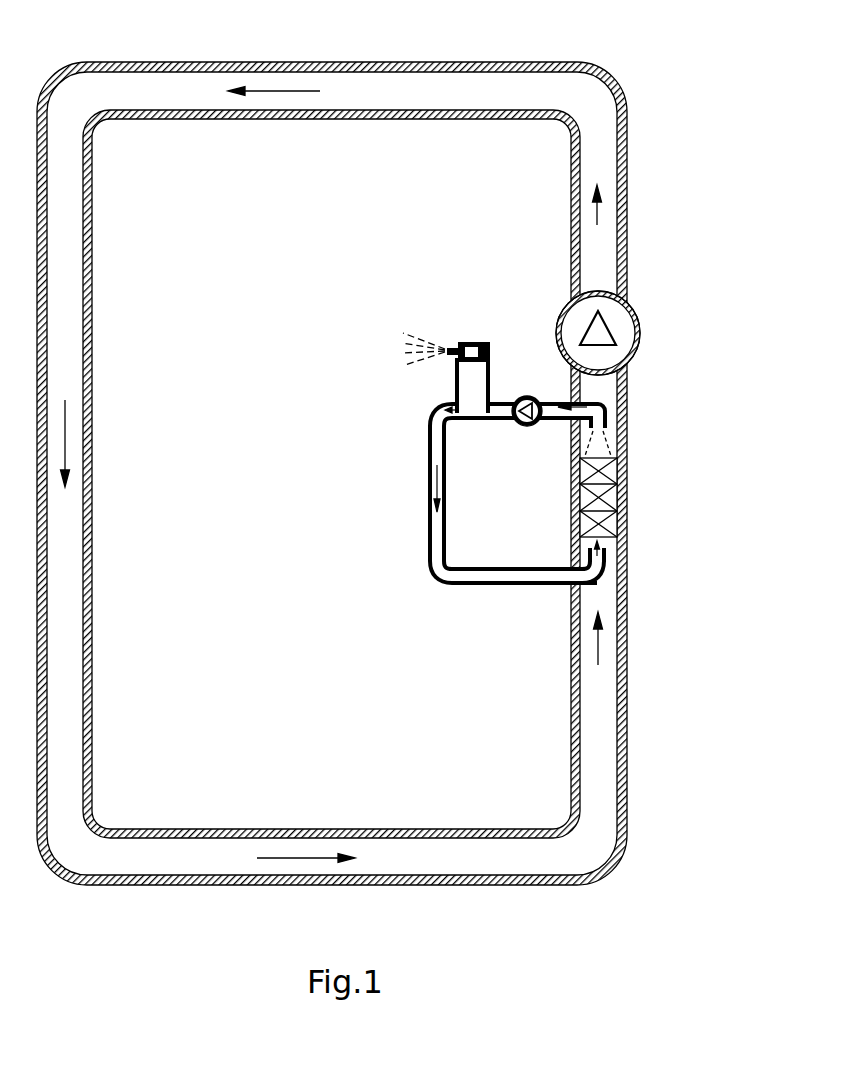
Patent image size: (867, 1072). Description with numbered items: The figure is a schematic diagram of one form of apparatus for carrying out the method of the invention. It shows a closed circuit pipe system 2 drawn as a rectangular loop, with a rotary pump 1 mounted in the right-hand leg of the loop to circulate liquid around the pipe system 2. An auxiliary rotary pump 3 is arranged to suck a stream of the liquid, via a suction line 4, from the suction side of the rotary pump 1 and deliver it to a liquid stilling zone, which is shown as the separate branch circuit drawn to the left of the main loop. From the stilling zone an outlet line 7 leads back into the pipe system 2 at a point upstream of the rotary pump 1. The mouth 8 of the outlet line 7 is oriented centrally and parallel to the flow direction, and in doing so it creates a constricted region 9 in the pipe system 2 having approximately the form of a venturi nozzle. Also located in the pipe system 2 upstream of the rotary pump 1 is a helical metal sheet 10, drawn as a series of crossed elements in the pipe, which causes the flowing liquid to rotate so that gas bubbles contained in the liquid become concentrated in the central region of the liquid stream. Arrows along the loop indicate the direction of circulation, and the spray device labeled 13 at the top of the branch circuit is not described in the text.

The rotary pump 1 is at (617, 318).
The closed circuit pipe system 2 is at (508, 62).
The auxiliary rotary pump 3 is at (525, 395).
The suction line 4 is at (555, 421).
The outlet line 7 is at (431, 406).
The mouth 8 is at (614, 558).
The constricted region 9 is at (613, 571).
The helical metal sheet 10 is at (618, 503).
The spray nozzle 13 is at (492, 358).